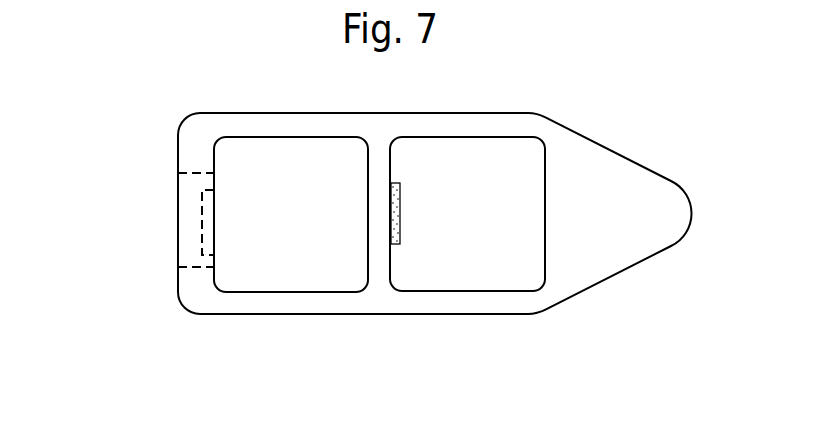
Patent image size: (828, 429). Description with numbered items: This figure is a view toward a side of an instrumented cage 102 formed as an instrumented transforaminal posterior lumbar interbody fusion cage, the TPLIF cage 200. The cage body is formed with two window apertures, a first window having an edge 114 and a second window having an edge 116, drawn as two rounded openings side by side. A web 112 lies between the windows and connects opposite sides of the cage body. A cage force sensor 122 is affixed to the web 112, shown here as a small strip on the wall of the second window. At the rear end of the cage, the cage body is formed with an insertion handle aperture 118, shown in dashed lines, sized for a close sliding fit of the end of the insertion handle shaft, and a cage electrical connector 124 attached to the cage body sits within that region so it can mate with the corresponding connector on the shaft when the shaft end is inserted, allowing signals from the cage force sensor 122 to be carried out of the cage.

The instrumented cage 102 is at (103, 45).
The instrumented TPLIF cage 200 is at (598, 140).
The web 112 is at (366, 267).
The edge of first window 114 is at (311, 289).
The edge of second window 116 is at (488, 289).
The insertion handle aperture 118 is at (189, 172).
The cage force sensor 122 is at (402, 214).
The cage electrical connector 124 is at (202, 243).